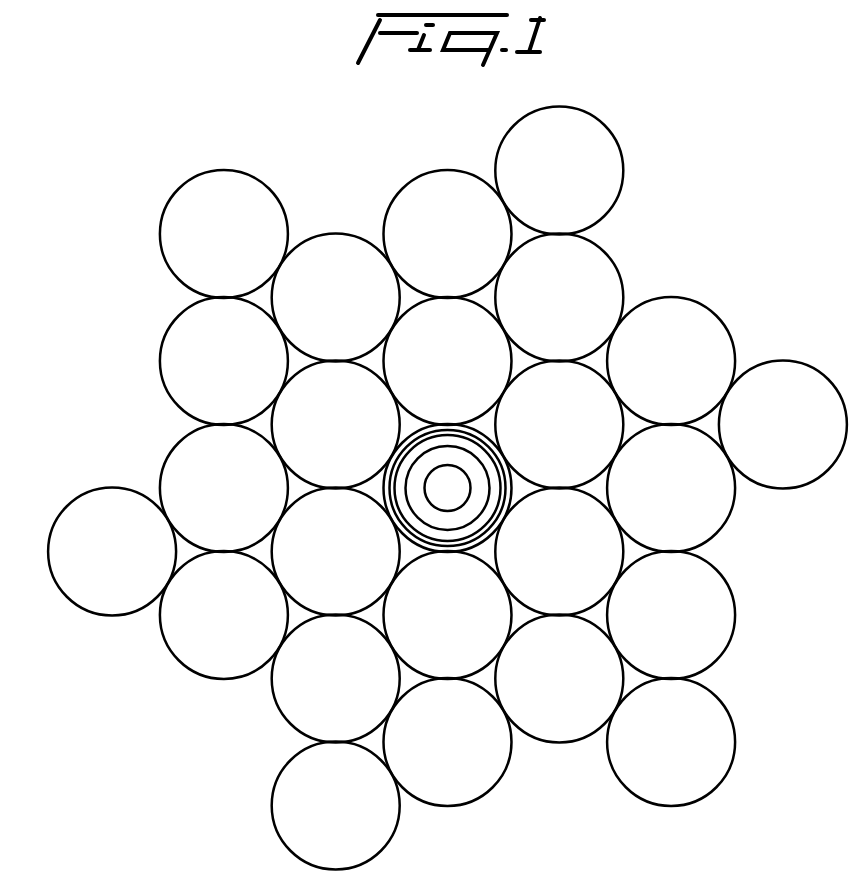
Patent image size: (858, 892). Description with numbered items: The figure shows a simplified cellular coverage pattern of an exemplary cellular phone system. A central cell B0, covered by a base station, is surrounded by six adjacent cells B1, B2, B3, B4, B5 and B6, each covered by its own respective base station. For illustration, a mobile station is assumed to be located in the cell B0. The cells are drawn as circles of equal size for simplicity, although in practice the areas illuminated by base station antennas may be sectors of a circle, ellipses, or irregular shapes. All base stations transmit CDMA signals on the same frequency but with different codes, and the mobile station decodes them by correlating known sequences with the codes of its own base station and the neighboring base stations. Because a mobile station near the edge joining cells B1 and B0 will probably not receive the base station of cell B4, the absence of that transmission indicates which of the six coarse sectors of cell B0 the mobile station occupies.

The cell B0 is at (448, 488).
The adjacent cell B1 is at (336, 425).
The adjacent cell B2 is at (448, 361).
The adjacent cell B3 is at (559, 425).
The adjacent cell B4 is at (559, 552).
The adjacent cell B5 is at (448, 615).
The adjacent cell B6 is at (336, 552).